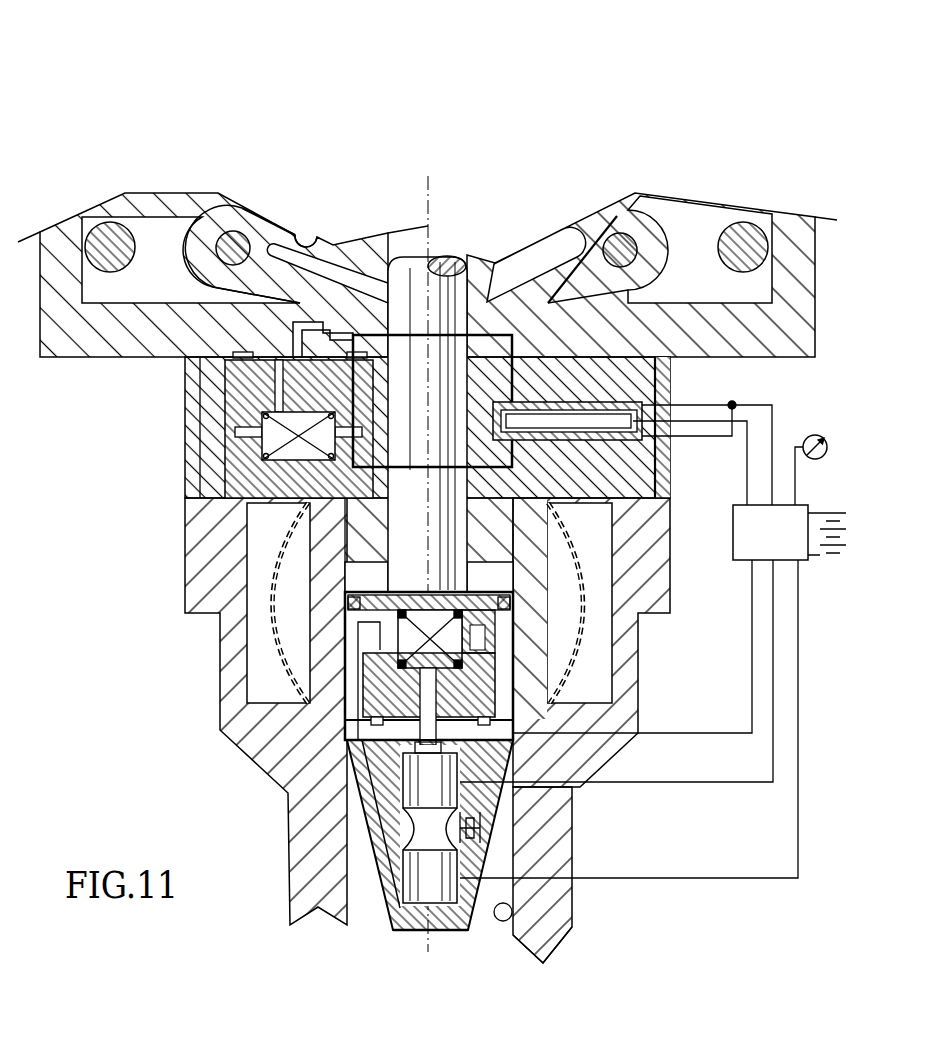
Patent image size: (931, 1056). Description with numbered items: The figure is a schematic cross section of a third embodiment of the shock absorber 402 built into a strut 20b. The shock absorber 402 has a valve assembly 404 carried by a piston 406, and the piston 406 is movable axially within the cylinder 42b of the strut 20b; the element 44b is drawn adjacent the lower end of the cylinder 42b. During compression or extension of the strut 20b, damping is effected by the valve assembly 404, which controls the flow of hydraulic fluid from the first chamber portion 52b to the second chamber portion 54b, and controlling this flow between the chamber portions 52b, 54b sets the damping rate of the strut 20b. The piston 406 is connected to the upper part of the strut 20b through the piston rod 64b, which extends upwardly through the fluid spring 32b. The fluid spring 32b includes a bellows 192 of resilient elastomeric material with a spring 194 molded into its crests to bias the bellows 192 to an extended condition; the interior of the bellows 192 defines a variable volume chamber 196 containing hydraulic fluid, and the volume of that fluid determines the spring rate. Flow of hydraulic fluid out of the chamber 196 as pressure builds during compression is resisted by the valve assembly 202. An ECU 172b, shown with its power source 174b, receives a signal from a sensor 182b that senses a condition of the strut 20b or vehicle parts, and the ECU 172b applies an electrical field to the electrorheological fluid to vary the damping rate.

The strut 20b is at (563, 150).
The bellows 192 is at (197, 207).
The spring 194 is at (235, 247).
The variable volume chamber 196 is at (313, 237).
The piston rod 64b is at (446, 272).
The fluid spring 32b is at (648, 203).
The valve assembly 202 is at (212, 406).
The sensor 182b is at (808, 437).
The ECU 172b is at (737, 533).
The battery 174b is at (825, 577).
The second chamber portion 54b is at (372, 574).
The valve assembly 404 is at (512, 707).
The shock absorber 402 is at (222, 770).
The first chamber portion 52b is at (372, 891).
The piston 406 is at (388, 932).
The cylinder 42b is at (545, 898).
The nut tip 44b is at (523, 923).